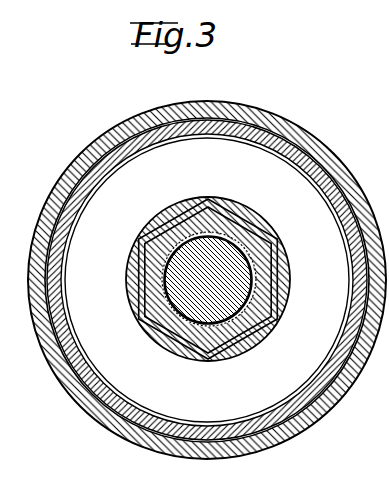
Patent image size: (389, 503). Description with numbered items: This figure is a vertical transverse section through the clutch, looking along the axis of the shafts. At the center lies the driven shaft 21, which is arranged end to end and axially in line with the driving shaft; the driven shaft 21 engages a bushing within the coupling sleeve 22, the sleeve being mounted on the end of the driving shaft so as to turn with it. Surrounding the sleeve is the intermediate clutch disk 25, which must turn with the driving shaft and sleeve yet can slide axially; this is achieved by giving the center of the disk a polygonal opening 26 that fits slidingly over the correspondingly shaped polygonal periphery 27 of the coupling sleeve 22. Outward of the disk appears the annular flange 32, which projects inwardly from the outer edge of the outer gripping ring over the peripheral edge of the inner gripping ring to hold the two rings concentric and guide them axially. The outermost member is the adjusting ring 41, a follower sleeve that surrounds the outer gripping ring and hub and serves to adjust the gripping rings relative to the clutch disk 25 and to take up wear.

The driven shaft 21 is at (222, 256).
The coupling sleeve 22 is at (213, 344).
The intermediate clutch disk 25 is at (207, 280).
The polygonal opening 26 is at (277, 289).
The polygonal periphery 27 is at (147, 273).
The annular flange 32 is at (264, 133).
The adjusting ring 41 is at (102, 412).